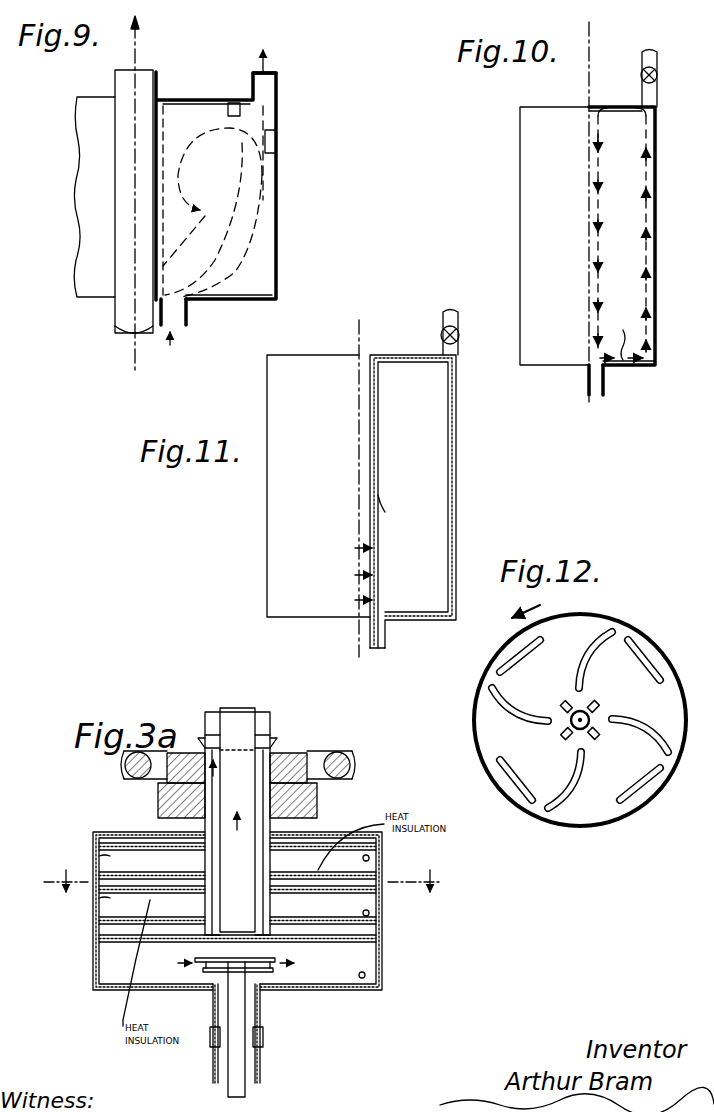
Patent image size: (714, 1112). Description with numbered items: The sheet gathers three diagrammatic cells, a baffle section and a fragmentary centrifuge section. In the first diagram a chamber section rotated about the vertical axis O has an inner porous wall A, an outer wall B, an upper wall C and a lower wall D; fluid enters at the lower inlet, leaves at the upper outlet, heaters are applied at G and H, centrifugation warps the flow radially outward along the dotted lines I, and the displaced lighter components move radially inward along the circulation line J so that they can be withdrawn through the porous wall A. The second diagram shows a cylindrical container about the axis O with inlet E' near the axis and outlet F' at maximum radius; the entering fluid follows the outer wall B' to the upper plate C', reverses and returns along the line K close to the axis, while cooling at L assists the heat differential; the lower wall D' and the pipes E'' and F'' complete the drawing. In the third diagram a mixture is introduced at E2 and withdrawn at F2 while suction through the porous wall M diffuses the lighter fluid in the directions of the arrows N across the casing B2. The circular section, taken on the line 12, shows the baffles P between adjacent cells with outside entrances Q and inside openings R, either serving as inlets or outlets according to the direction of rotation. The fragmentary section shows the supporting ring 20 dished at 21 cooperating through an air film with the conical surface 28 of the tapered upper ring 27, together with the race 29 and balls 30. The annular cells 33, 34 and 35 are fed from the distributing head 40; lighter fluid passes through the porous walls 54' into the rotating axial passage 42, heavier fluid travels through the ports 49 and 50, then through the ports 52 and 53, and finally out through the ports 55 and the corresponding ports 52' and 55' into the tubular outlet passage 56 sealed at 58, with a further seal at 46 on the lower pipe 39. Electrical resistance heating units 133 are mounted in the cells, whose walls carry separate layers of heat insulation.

In FIG. 9, the vertical axis O is at (133, 185).
In FIG. 10, the vertical axis O is at (584, 212).
In FIG. 11, the vertical axis O is at (357, 488).
In FIG. 9, the inner porous wall A is at (152, 186).
In FIG. 9, the outer wall B is at (231, 186).
In FIG. 9, the upper wall C is at (206, 88).
In FIG. 9, the lower wall D is at (229, 315).
In FIG. 9, the inlet E' is at (173, 334).
In FIG. 9, the outlet F' is at (280, 65).
In FIG. 9, the heater G is at (234, 103).
In FIG. 9, the heater H is at (277, 143).
In FIG. 9, the dotted circulation lines I is at (226, 232).
In FIG. 9, the fluid circulation line J is at (185, 142).
In FIG. 10, the outer wall B' is at (640, 236).
In FIG. 10, the upper plate C' is at (615, 93).
In FIG. 10, the bottom wall D' is at (648, 373).
In FIG. 10, the outlet E'' is at (615, 384).
In FIG. 10, the inlet pipe with valve F'' is at (667, 79).
In FIG. 10, the return flow line K is at (597, 140).
In FIG. 10, the cooling location L is at (617, 334).
In FIG. 11, the casing B2 is at (457, 489).
In FIG. 11, the mixture inlet E2 is at (386, 643).
In FIG. 11, the withdrawal outlet F2 is at (459, 353).
In FIG. 11, the porous wall M is at (380, 506).
In FIG. 11, the diffusion arrows N is at (374, 600).
In FIG. 12, the baffles P is at (592, 656).
In FIG. 12, the outside ports Q is at (522, 652).
In FIG. 12, the inside openings R is at (562, 703).
In FIG. 3A, the supporting ring 20 is at (318, 808).
In FIG. 3A, the dished upper surface 21 is at (314, 797).
In FIG. 3A, the tapered upper metallic ring 27 is at (284, 765).
In FIG. 3A, the lower conical surface 28 is at (298, 770).
In FIG. 3A, the ball race 29 is at (330, 756).
In FIG. 3A, the balls 30 is at (351, 764).
In FIG. 3A, the annular centrifuge cell 33 is at (237, 949).
In FIG. 3A, the annular centrifuge cell 34 is at (131, 906).
In FIG. 3A, the annular centrifuge cell 35 is at (133, 861).
In FIG. 3A, the central pipe 39 is at (247, 1090).
In FIG. 3A, the distributing head 40 is at (262, 958).
In FIG. 3A, the rotating axial passage 42 is at (237, 820).
In FIG. 3A, the seal 46 is at (264, 1031).
In FIG. 3A, the ports 49 is at (98, 950).
In FIG. 3A, the ports 50 is at (200, 960).
In FIG. 3A, the ports 52 is at (211, 911).
In FIG. 3A, the partition plate 52' is at (323, 893).
In FIG. 3A, the ports 53 is at (210, 868).
In FIG. 3A, the porous wall 54' is at (202, 860).
In FIG. 3A, the ports 55 is at (126, 852).
In FIG. 3A, the top partition 55' is at (323, 856).
In FIG. 3A, the tubular outlet passage 56 is at (250, 782).
In FIG. 3A, the seal 58 is at (204, 742).
In FIG. 3A, the electrical resistance heating unit 133 is at (372, 860).
In FIG. 3A, the section line 12 is at (248, 878).